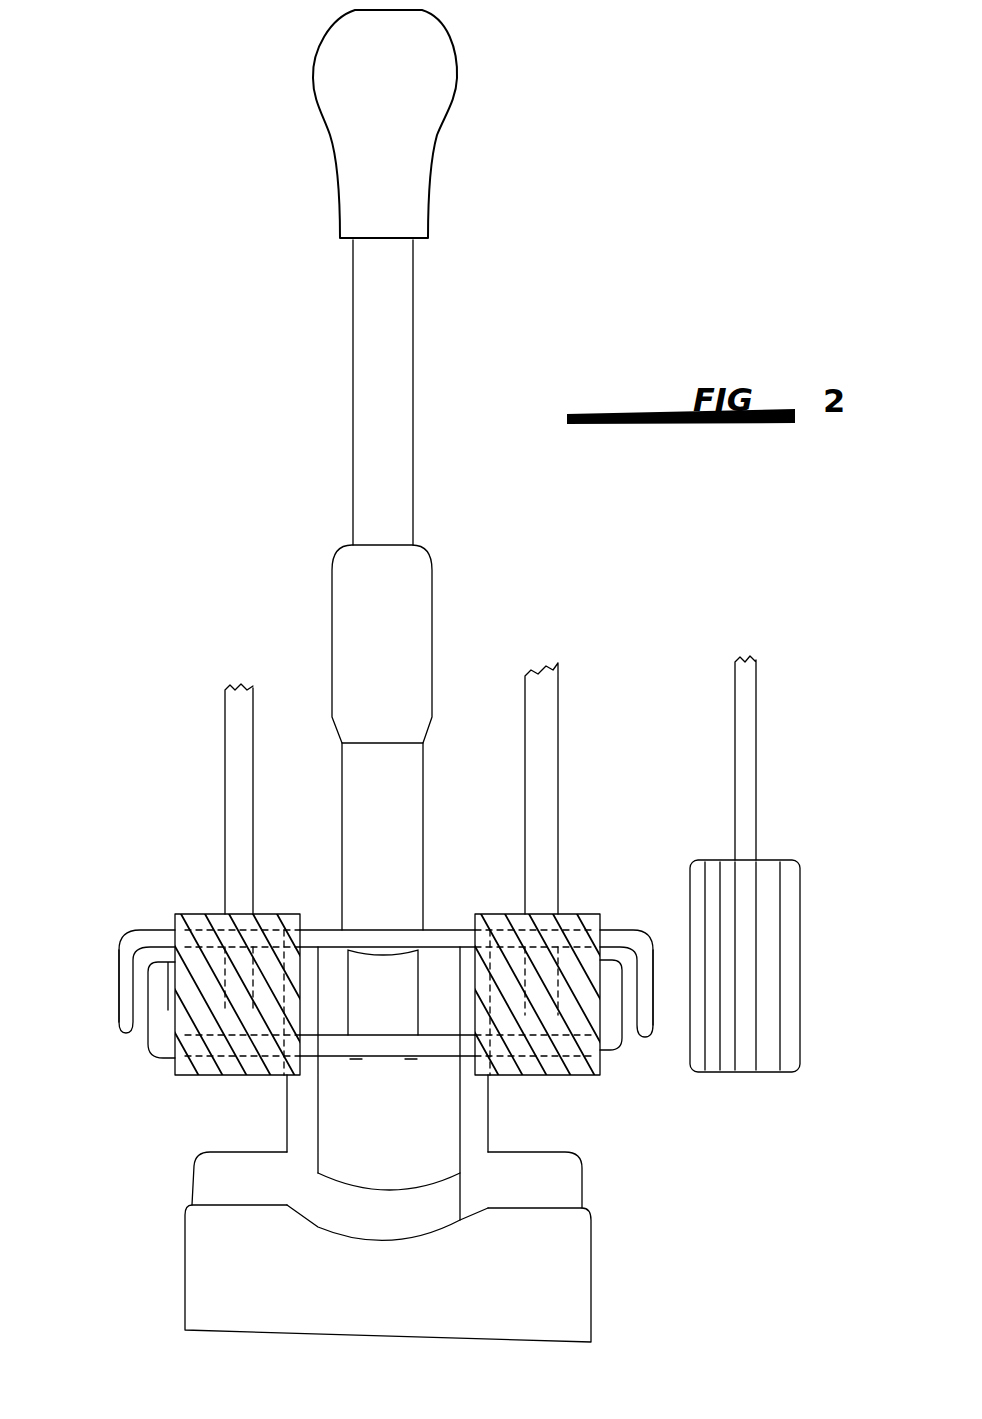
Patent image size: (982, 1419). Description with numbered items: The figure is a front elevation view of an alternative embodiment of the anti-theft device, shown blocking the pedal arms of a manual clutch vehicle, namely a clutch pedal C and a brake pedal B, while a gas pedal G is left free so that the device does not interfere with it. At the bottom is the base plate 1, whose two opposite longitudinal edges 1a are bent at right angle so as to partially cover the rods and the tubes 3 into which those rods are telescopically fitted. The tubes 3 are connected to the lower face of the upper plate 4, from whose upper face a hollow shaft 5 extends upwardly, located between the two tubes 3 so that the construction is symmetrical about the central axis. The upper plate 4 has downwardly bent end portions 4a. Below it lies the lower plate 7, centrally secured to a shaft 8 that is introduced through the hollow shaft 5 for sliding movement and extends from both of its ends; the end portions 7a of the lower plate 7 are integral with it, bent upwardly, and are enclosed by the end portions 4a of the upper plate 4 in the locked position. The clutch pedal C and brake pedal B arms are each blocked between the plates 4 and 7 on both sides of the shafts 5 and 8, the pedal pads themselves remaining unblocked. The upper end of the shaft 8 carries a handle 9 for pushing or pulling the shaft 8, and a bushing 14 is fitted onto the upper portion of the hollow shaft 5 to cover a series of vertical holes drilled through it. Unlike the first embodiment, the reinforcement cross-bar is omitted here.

The base plate 1 is at (600, 1282).
The longitudinal edges 1a is at (210, 1272).
The tubes 3 is at (296, 1122).
The upper plate 4 is at (621, 940).
The end portions of the upper plate 4a is at (119, 1002).
The hollow shaft 5 is at (385, 829).
The lower plate 7 is at (440, 1043).
The end portions of the lower plate 7a is at (162, 1015).
The shaft 8 is at (390, 400).
The handle 9 is at (426, 103).
The bushing 14 is at (395, 630).
The brake pedal B is at (563, 750).
The clutch pedal C is at (214, 756).
The gas pedal G is at (763, 744).